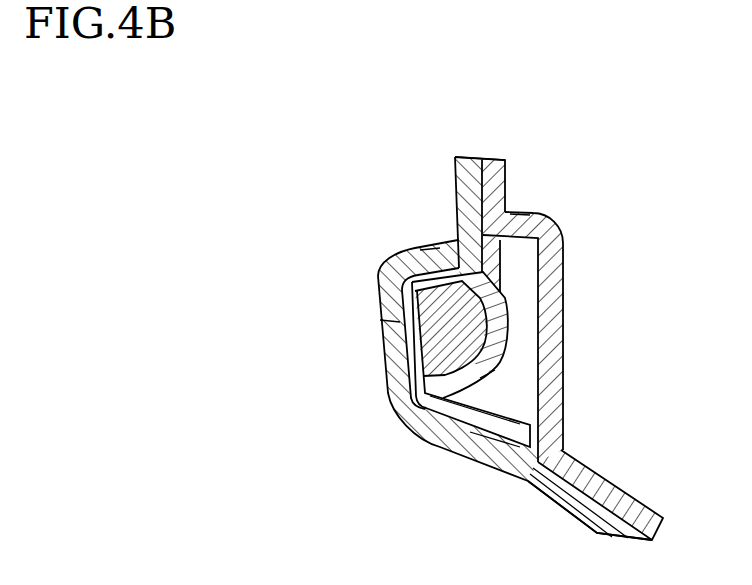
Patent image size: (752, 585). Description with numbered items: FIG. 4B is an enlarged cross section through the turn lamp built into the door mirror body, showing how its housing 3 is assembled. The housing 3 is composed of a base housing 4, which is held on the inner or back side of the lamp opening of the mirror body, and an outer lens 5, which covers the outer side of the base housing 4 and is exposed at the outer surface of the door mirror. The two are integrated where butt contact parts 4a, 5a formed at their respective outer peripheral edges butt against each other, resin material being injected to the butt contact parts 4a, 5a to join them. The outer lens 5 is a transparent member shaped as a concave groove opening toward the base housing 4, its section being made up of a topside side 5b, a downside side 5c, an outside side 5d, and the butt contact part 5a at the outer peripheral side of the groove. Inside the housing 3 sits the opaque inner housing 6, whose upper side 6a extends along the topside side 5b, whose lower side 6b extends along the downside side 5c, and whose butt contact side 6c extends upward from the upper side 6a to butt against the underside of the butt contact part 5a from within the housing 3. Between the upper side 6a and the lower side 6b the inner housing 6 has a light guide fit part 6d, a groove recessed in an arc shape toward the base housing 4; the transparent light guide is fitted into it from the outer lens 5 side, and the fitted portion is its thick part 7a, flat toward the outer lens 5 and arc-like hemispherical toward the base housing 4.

The housing 3 is at (479, 141).
The base housing 4 is at (568, 353).
The butt contact part 4a is at (498, 182).
The outer lens 5 is at (379, 401).
The butt contact part 5a is at (472, 187).
The topside side 5b is at (437, 257).
The downside side 5c is at (489, 460).
The outside side 5d is at (395, 352).
The inner housing 6 is at (516, 318).
The upper side 6a is at (512, 216).
The lower side 6b is at (472, 422).
The butt contact side 6c is at (470, 262).
The light guide fit part 6d is at (471, 366).
The thick part 7a is at (442, 325).